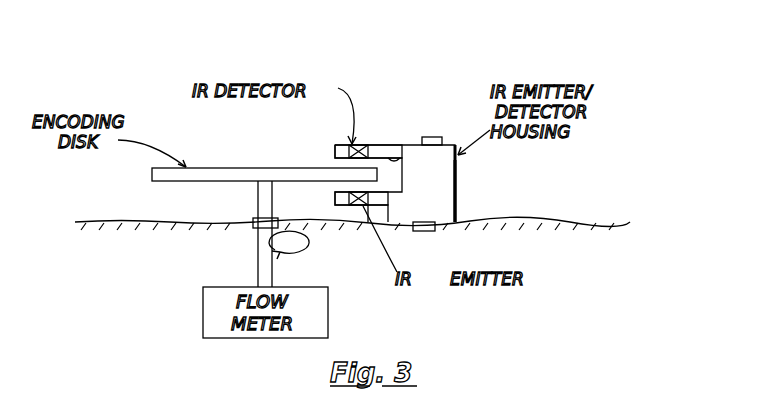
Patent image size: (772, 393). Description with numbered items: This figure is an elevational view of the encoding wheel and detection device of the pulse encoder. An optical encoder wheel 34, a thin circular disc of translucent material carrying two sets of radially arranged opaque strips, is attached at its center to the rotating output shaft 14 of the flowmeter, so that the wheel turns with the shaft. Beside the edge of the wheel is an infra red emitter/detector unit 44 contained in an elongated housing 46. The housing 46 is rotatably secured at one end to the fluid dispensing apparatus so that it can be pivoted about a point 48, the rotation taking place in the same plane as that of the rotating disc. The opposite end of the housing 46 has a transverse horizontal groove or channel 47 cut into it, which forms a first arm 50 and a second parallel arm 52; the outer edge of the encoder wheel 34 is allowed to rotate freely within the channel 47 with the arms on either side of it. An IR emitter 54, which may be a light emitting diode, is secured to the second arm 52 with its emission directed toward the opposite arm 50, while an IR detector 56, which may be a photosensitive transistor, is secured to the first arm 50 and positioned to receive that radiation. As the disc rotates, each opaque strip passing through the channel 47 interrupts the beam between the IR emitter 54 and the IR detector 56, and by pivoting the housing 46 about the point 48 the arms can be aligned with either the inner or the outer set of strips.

The rotating output shaft 14 is at (258, 284).
The optical encoder wheel 34 is at (142, 167).
The infra red emitter/detector unit 44 is at (448, 172).
The elongated housing 46 is at (448, 207).
The transverse horizontal groove or channel 47 is at (395, 158).
The pivot point 48 is at (430, 230).
The first arm 50 is at (335, 152).
The second parallel arm 52 is at (338, 200).
The IR emitter 54 is at (356, 206).
The IR detector 56 is at (360, 145).